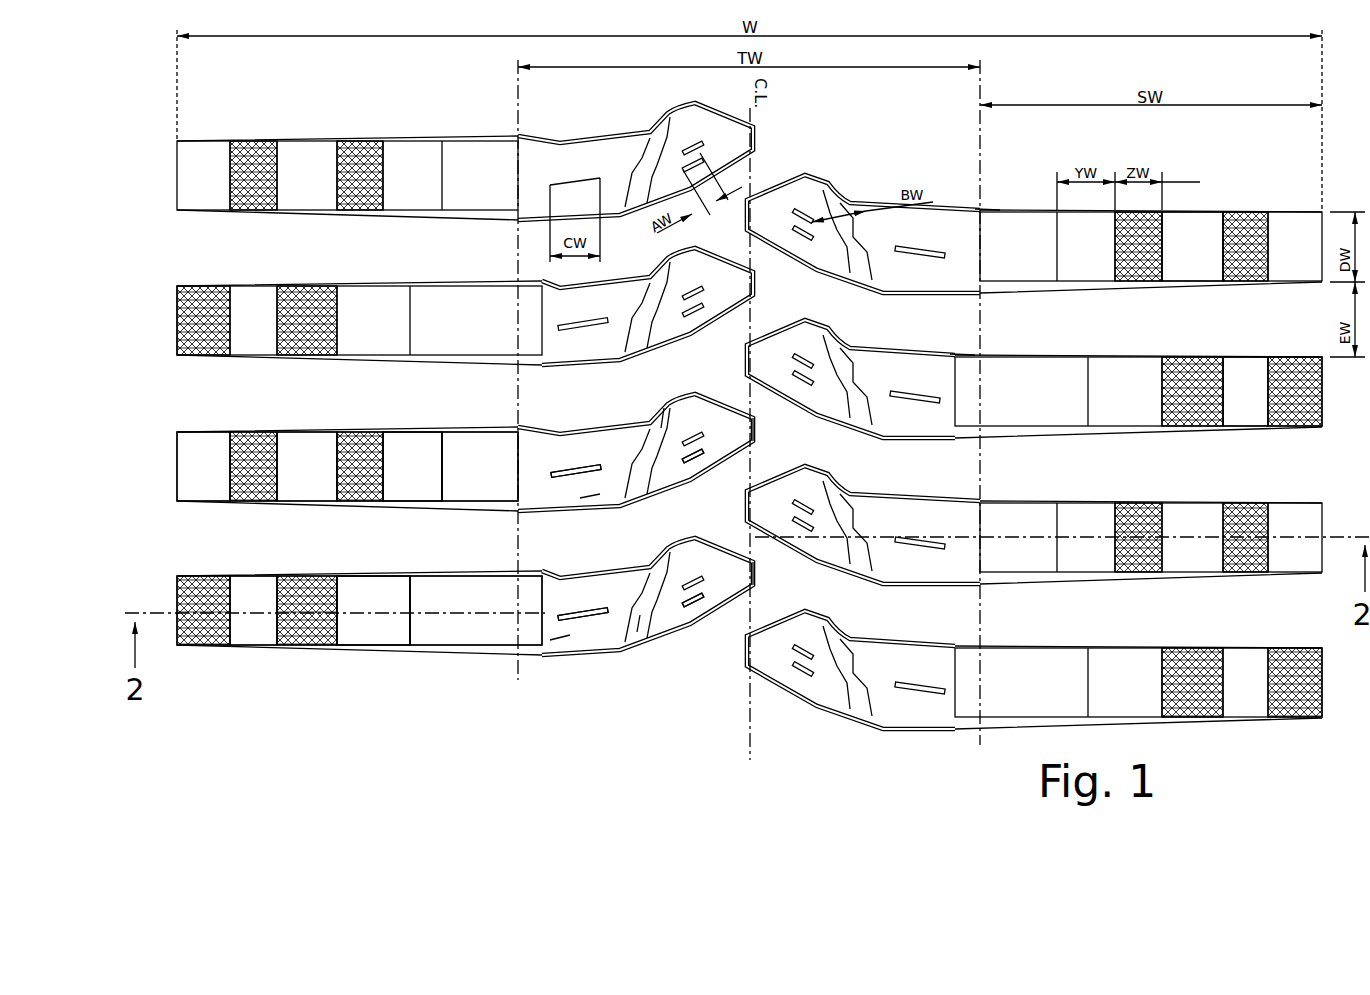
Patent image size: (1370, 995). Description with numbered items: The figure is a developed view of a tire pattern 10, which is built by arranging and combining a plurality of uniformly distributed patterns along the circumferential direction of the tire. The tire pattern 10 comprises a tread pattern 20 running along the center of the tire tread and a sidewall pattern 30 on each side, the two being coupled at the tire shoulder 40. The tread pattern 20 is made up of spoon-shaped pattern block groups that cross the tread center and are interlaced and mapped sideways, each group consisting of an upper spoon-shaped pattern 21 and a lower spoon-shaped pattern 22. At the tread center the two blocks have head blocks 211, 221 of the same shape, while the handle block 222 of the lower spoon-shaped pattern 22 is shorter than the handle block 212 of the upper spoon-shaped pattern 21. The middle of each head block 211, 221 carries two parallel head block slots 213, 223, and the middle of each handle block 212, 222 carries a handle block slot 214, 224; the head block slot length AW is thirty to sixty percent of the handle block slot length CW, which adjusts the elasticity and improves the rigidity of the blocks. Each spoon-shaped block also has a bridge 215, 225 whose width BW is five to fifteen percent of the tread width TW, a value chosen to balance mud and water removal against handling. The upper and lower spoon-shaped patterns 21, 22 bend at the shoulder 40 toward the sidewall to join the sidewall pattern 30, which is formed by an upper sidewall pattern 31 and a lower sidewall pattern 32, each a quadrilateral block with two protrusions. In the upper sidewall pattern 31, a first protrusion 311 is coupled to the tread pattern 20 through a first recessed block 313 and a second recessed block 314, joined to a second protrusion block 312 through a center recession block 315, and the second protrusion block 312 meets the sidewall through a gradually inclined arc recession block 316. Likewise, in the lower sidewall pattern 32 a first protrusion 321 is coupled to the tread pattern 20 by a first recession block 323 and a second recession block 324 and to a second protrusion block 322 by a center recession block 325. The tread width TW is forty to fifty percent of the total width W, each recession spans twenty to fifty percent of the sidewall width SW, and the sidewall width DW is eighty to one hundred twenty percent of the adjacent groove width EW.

The tire pattern 10 is at (218, 706).
The tread pattern 20 is at (611, 134).
The upper spoon-shaped pattern 21 is at (811, 197).
The lower spoon-shaped pattern 22 is at (903, 380).
The sidewall pattern 30 is at (324, 130).
The upper sidewall pattern 31 is at (1200, 230).
The lower sidewall pattern 32 is at (1260, 357).
The tire shoulder 40 is at (980, 208).
The head block 211 is at (753, 430).
The handle block 212 is at (590, 493).
The head block slot 213 is at (700, 450).
The handle block slot 214 is at (582, 467).
The bridge 215 is at (658, 430).
The head block 221 is at (753, 575).
The handle block 222 is at (560, 637).
The head block slot 223 is at (693, 597).
The handle block slot 224 is at (580, 615).
The bridge 225 is at (638, 628).
The first protrusion 311 is at (365, 432).
The second protrusion block 312 is at (253, 432).
The first recessed block 313 is at (470, 443).
The second recessed block 314 is at (418, 443).
The center recession block 315 is at (302, 447).
The gradually inclined arc recession block 316 is at (185, 477).
The first protrusion 321 is at (300, 585).
The second protrusion block 322 is at (175, 590).
The first recession block 323 is at (475, 588).
The second recession block 324 is at (362, 592).
The center recession block 325 is at (248, 585).